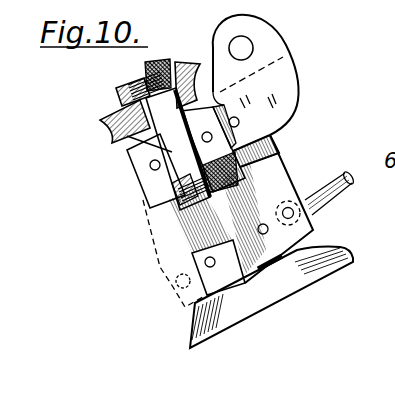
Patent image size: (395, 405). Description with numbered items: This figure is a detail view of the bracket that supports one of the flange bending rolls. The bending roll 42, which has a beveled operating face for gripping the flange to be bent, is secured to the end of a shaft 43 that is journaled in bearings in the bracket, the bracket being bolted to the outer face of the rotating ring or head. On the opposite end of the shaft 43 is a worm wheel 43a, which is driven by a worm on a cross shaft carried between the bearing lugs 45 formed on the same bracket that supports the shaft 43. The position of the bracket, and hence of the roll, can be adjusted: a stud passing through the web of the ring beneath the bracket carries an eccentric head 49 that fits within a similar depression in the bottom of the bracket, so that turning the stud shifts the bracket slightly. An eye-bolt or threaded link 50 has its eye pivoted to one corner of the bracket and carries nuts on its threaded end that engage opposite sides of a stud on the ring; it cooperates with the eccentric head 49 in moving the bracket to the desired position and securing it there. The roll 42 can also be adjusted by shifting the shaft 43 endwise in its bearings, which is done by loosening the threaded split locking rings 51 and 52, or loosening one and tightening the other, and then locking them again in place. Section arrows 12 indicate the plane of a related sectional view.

The section line 12 is at (305, 146).
The flange bending roll 42 is at (317, 276).
The shaft 43 is at (232, 243).
The worm wheel 43a is at (115, 130).
The bearing lugs 45 is at (265, 27).
The eccentric head 49 is at (258, 170).
The eye-bolt 50 is at (340, 198).
The threaded split locking ring 51 is at (172, 205).
The threaded split locking ring 52 is at (166, 63).